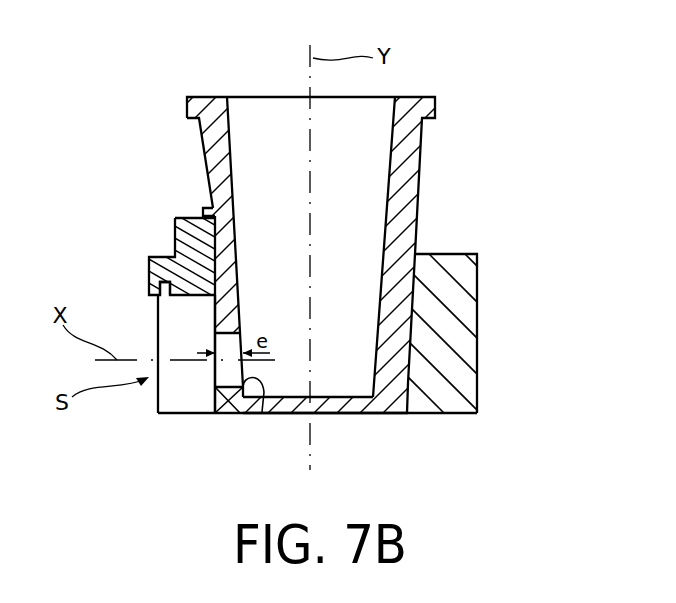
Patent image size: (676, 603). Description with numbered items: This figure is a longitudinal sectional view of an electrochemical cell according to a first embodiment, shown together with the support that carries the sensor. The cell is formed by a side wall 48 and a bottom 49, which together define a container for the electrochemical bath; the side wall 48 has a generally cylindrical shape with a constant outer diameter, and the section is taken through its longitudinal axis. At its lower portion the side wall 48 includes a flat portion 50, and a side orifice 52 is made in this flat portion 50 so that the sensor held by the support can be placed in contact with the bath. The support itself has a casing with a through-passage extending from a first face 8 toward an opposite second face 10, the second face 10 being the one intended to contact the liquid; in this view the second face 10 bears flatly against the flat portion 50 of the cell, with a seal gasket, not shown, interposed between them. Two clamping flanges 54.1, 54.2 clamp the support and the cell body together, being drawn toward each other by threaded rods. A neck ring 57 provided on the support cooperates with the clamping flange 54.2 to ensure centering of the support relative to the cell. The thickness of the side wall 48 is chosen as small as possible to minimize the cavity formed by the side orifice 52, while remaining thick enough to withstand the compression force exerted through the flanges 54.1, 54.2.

The first face 8 is at (157, 395).
The second face 10 is at (223, 416).
The side wall 48 is at (400, 182).
The bottom 49 is at (355, 414).
The flat portion 50 is at (200, 208).
The side orifice 52 is at (262, 412).
The clamping flange 54.1 is at (470, 301).
The clamping flange 54.2 is at (175, 236).
The neck ring 57 is at (165, 286).